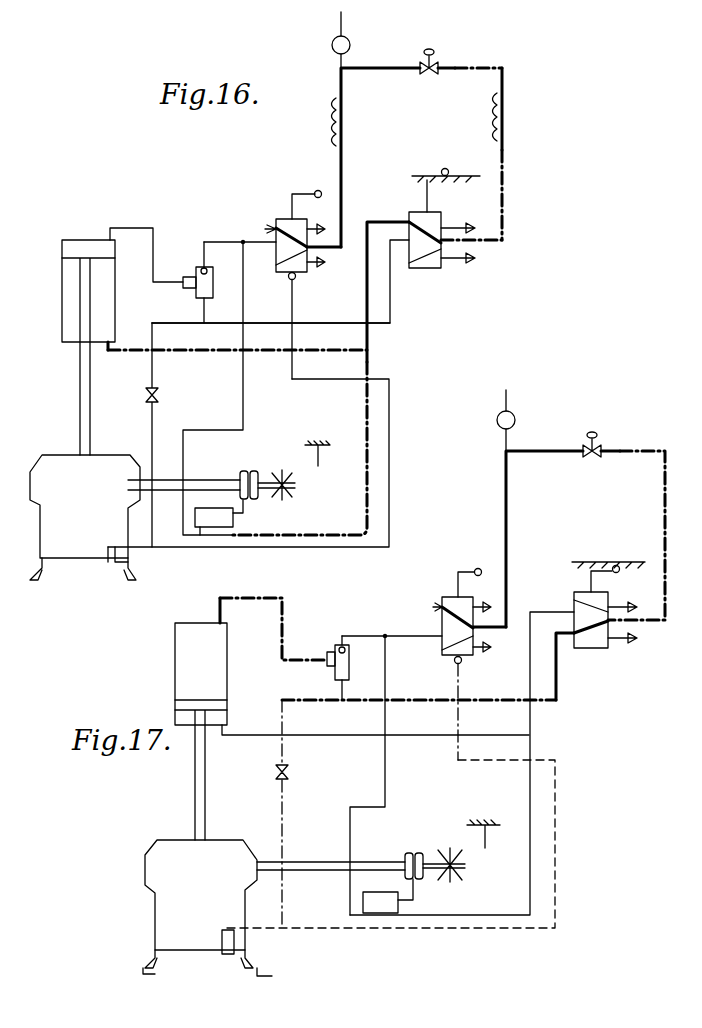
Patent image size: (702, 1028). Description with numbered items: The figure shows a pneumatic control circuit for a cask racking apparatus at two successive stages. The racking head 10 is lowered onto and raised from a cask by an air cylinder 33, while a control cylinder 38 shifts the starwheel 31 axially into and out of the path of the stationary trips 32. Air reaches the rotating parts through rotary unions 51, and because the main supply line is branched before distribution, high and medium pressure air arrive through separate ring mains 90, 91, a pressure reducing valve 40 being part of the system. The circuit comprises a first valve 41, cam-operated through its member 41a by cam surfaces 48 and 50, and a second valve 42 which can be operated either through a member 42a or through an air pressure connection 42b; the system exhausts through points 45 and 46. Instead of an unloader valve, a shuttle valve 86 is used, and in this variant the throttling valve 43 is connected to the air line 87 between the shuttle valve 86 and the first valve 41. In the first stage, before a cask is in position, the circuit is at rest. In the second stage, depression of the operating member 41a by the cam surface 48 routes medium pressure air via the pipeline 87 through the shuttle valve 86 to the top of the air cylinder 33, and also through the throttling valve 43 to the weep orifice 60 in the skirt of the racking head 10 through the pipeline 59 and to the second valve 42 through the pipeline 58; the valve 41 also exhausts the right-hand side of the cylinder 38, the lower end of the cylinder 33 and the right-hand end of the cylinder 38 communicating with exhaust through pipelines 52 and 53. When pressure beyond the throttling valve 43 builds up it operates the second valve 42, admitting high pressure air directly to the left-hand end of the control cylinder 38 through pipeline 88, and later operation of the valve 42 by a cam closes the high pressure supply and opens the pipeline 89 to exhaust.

In FIG. 16, the racking head 10 is at (85, 517).
In FIG. 17, the racking head 10 is at (207, 908).
In FIG. 17, the starwheel 31 is at (463, 869).
In FIG. 16, the trips 32 is at (305, 446).
In FIG. 17, the trips 32 is at (467, 825).
In FIG. 16, the air cylinder 33 is at (72, 268).
In FIG. 17, the air cylinder 33 is at (201, 731).
In FIG. 16, the control cylinder 38 is at (213, 530).
In FIG. 17, the control cylinder 38 is at (392, 914).
In FIG. 16, the pressure reducing valve 40 is at (435, 62).
In FIG. 17, the pressure reducing valve 40 is at (598, 445).
In FIG. 16, the first valve 41 is at (430, 268).
In FIG. 17, the first valve 41 is at (590, 648).
In FIG. 16, the operating member 41a is at (436, 190).
In FIG. 17, the operating member 41a is at (590, 580).
In FIG. 16, the second valve 42 is at (284, 222).
In FIG. 17, the second valve 42 is at (452, 605).
In FIG. 16, the operating member 42a is at (298, 190).
In FIG. 17, the operating member 42a is at (468, 568).
In FIG. 16, the air pressure connection 42b is at (298, 282).
In FIG. 17, the air pressure connection 42b is at (464, 664).
In FIG. 17, the throttling valve 43 is at (290, 775).
In FIG. 16, the exhaust point 45 is at (478, 226).
In FIG. 17, the exhaust point 45 is at (627, 606).
In FIG. 16, the exhaust point 46 is at (478, 258).
In FIG. 17, the exhaust point 46 is at (626, 640).
In FIG. 17, the cam surface 48 is at (578, 560).
In FIG. 16, the cam surface 50 is at (425, 176).
In FIG. 16, the rotary unions 51 is at (332, 46).
In FIG. 17, the rotary unions 51 is at (514, 415).
In FIG. 16, the pipeline 52 is at (222, 352).
In FIG. 16, the pipeline 53 is at (370, 358).
In FIG. 17, the pipeline 53 is at (532, 750).
In FIG. 16, the pipeline 58 is at (391, 448).
In FIG. 17, the pipeline 58 is at (557, 828).
In FIG. 16, the pipeline 59 is at (150, 420).
In FIG. 17, the pipeline 59 is at (280, 803).
In FIG. 16, the weep orifice 60 is at (112, 564).
In FIG. 17, the weep orifice 60 is at (226, 956).
In FIG. 16, the shuttle valve 86 is at (200, 266).
In FIG. 17, the shuttle valve 86 is at (327, 666).
In FIG. 16, the air line 87 is at (275, 322).
In FIG. 17, the air line 87 is at (418, 698).
In FIG. 16, the pipeline 88 is at (244, 395).
In FIG. 16, the pipeline 89 is at (248, 240).
In FIG. 17, the pipeline 89 is at (412, 634).
In FIG. 16, the ring main 90 is at (342, 120).
In FIG. 16, the ring main 91 is at (504, 118).